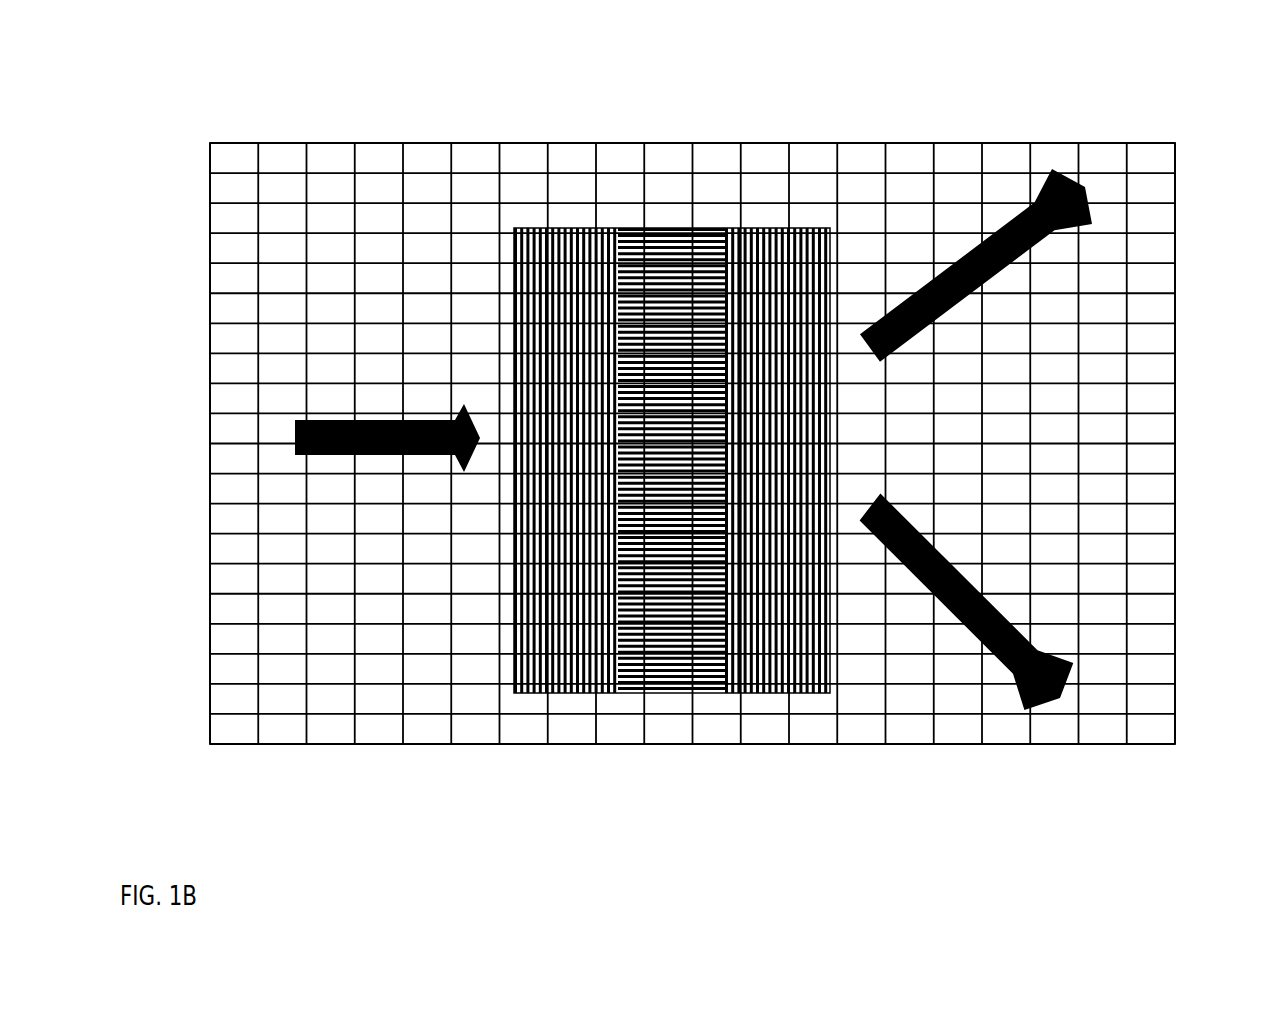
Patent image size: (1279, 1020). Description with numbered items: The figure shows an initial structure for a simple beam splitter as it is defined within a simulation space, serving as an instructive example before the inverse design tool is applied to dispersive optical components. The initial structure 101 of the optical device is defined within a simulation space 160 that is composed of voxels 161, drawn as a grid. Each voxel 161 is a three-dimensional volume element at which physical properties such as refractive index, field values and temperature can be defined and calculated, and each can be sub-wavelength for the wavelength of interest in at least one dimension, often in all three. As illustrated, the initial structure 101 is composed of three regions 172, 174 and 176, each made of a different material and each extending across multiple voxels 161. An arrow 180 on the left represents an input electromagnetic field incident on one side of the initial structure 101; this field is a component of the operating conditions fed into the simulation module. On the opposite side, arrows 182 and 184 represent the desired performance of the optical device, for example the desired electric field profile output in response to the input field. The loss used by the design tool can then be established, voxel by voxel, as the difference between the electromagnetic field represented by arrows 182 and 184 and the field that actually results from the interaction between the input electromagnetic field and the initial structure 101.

The initial structure 101 is at (588, 463).
The simulation space 160 is at (193, 222).
The voxel 161 is at (1005, 162).
The region 172 is at (590, 653).
The region 174 is at (657, 655).
The region 176 is at (763, 653).
The arrow 180 is at (280, 438).
The arrow 182 is at (1018, 263).
The arrow 184 is at (982, 578).